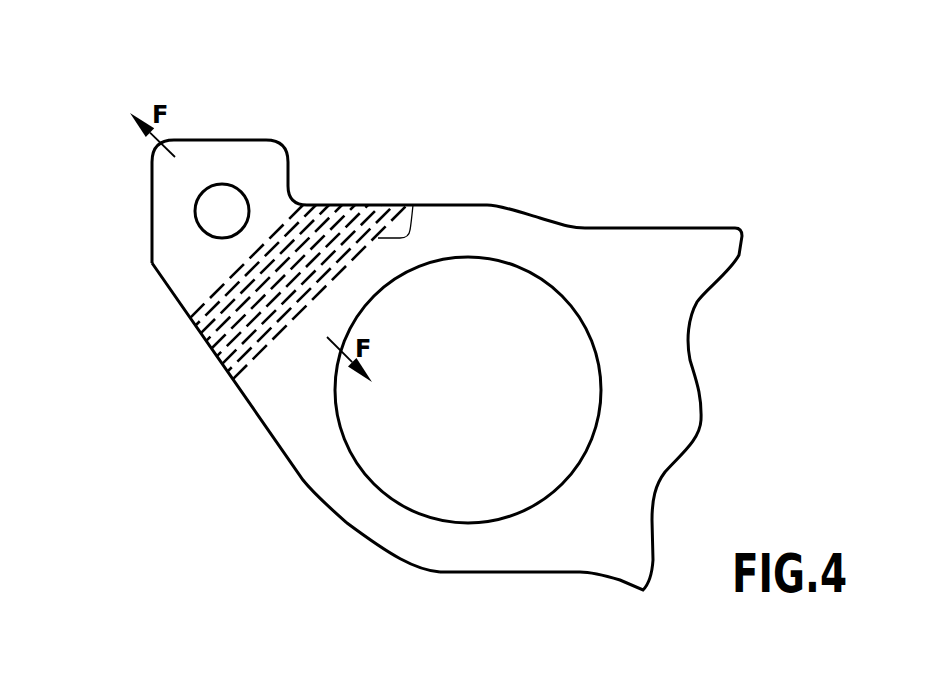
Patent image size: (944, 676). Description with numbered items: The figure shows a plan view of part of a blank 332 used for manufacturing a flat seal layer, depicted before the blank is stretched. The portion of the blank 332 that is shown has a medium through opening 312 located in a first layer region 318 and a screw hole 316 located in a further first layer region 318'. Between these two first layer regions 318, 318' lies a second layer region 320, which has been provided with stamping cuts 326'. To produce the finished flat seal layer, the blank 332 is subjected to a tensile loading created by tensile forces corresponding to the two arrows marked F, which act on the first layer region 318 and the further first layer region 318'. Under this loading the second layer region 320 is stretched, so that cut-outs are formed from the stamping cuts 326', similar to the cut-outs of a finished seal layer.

The medium through opening 312 is at (491, 402).
The screw hole 316 is at (210, 208).
The first layer region 318 is at (524, 367).
The further first layer region 318' is at (229, 165).
The second layer region 320 is at (192, 358).
The stamping cuts 326' is at (418, 183).
The blank 332 is at (292, 504).